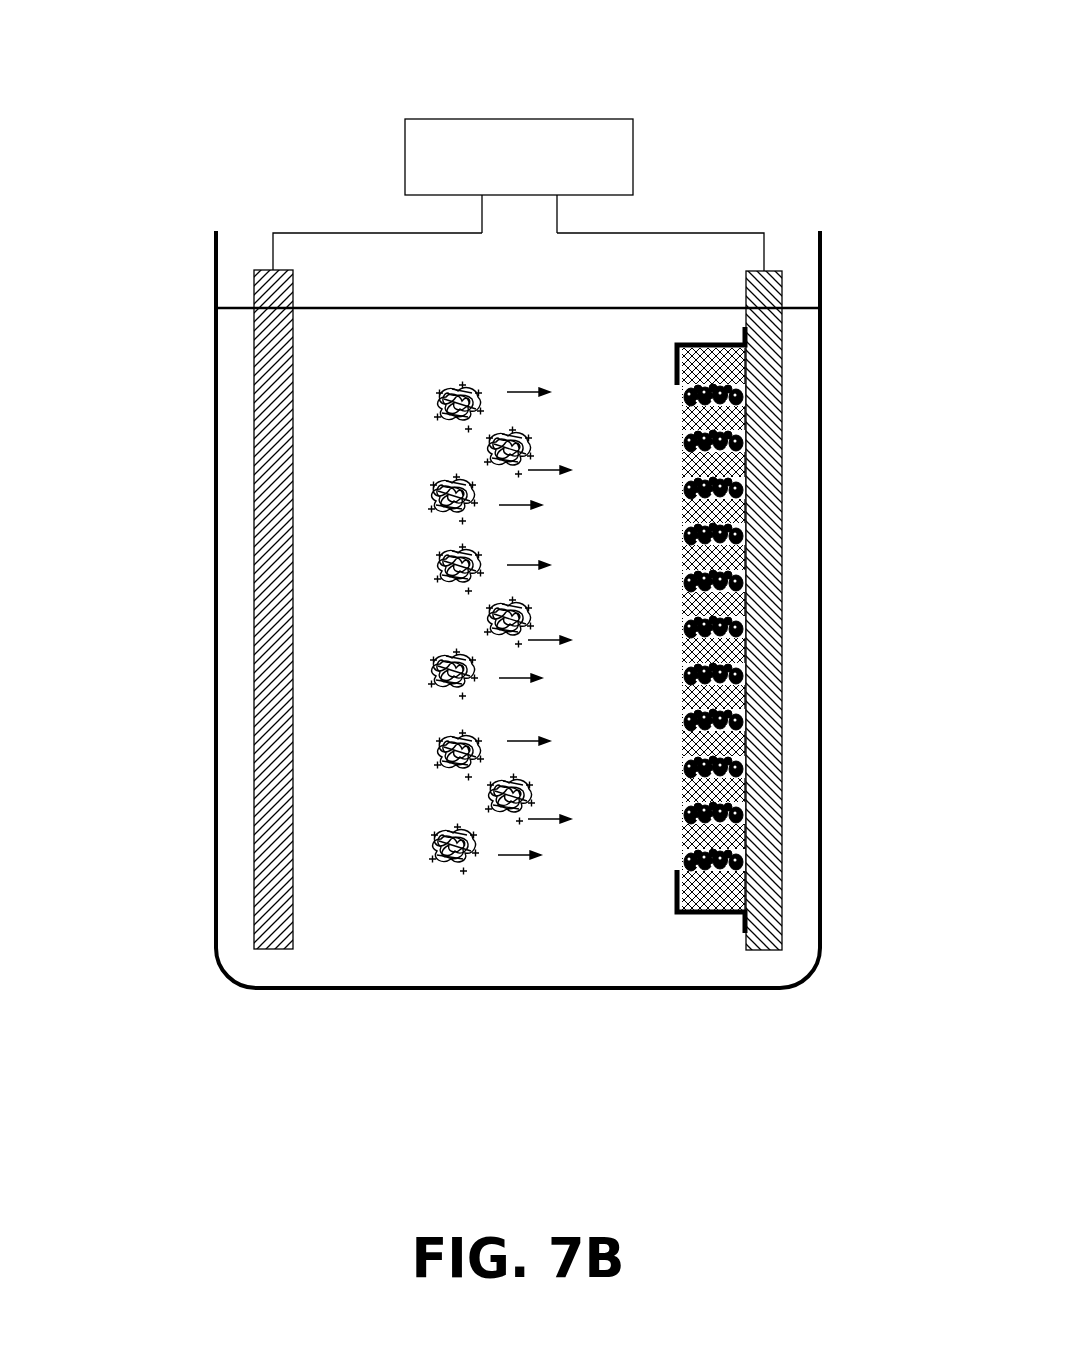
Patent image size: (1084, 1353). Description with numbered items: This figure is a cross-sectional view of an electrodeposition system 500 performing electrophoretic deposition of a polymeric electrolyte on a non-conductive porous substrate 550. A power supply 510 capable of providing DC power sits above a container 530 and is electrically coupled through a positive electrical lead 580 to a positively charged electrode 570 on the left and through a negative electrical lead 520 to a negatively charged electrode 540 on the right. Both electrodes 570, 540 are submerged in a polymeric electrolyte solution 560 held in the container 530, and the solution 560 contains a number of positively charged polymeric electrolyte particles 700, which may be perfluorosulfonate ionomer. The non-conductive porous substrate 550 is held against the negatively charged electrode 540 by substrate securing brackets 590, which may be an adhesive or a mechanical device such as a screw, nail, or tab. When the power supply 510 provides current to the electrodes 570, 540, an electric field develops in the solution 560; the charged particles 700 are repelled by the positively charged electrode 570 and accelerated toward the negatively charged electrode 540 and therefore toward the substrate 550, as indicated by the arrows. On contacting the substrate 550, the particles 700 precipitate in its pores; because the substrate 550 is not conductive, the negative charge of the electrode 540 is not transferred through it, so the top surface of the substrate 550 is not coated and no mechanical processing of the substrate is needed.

The electrophoretic deposition system 500 is at (148, 381).
The power supply 510 is at (557, 119).
The negative electrical lead 520 is at (662, 232).
The container 530 is at (822, 410).
The negatively charged electrode 540 is at (782, 705).
The non-conductive porous substrate 550 is at (709, 914).
The polymeric electrolyte solution 560 is at (367, 930).
The positively charged electrode 570 is at (255, 700).
The positive electrical lead 580 is at (360, 231).
The substrate securing bracket 590 is at (713, 345).
The positively charged polymeric electrolyte particle 700 is at (687, 863).